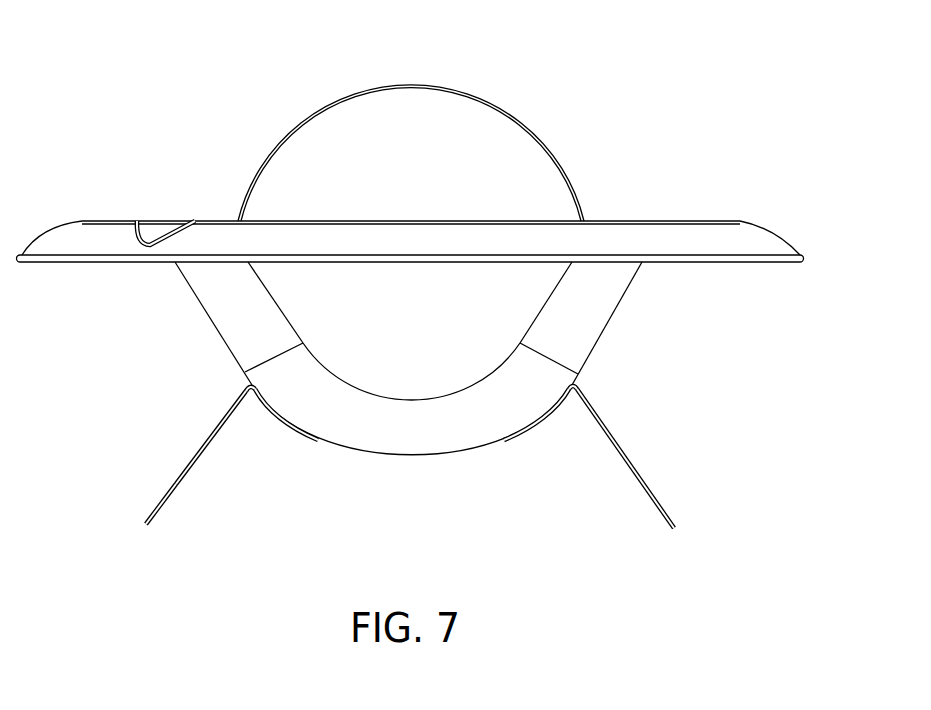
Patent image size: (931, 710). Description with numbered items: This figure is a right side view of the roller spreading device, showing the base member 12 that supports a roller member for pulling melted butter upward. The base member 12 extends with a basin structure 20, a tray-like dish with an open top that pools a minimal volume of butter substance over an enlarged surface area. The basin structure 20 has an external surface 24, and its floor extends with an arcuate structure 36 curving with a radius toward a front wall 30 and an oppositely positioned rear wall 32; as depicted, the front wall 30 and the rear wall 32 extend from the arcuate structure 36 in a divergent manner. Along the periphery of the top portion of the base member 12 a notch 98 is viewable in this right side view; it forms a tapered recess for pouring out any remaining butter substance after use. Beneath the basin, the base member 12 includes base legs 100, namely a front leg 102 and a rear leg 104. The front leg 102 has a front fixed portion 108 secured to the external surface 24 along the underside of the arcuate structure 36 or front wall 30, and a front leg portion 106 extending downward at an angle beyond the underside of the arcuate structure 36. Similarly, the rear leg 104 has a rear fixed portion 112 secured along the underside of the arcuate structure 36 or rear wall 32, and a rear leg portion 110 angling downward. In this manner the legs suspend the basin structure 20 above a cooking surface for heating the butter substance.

The base member 12 is at (401, 393).
The basin structure 20 is at (207, 323).
The external surface 24 is at (196, 292).
The front wall 30 is at (245, 372).
The rear wall 32 is at (584, 358).
The arcuate structure 36 is at (462, 461).
The notch 98 is at (137, 214).
The base legs 100 is at (194, 473).
The front leg 102 is at (162, 493).
The rear leg 104 is at (631, 457).
The front leg portion 106 is at (191, 458).
The front fixed portion 108 is at (286, 424).
The rear leg portion 110 is at (643, 473).
The rear fixed portion 112 is at (538, 421).